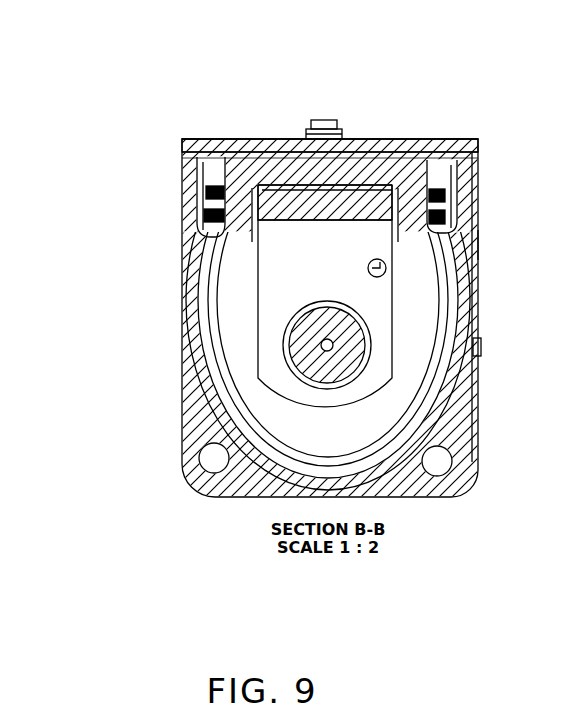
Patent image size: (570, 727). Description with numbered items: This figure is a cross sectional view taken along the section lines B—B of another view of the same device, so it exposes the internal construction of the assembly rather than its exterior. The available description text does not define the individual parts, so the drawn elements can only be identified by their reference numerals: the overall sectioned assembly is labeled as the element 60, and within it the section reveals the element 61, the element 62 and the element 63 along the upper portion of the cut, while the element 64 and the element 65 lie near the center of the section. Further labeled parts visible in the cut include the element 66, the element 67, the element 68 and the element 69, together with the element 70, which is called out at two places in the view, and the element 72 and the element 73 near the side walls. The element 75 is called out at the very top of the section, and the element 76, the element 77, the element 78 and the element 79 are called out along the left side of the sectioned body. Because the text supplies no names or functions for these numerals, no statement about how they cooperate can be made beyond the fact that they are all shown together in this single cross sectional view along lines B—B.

The bearing housing assembly 60 is at (226, 503).
The housing body 61 is at (190, 228).
The cover plate 62 is at (430, 153).
The cover plate flange 63 is at (388, 152).
The central bolt hole 64 is at (373, 312).
The hub flange 65 is at (313, 212).
The hub bore wall 66 is at (247, 197).
The right seal pocket 67 is at (470, 172).
The right seal ring 68 is at (445, 202).
The left seal pocket 69 is at (197, 178).
The hub 70 is at (258, 175).
The housing side wall 72 is at (465, 245).
The lower seal ring 73 is at (205, 215).
The fastener 75 is at (289, 168).
The bearing outer race 76 is at (197, 305).
The upper seal ring 77 is at (210, 192).
The seal carrier 78 is at (205, 185).
The bearing inner rings 79 is at (196, 252).